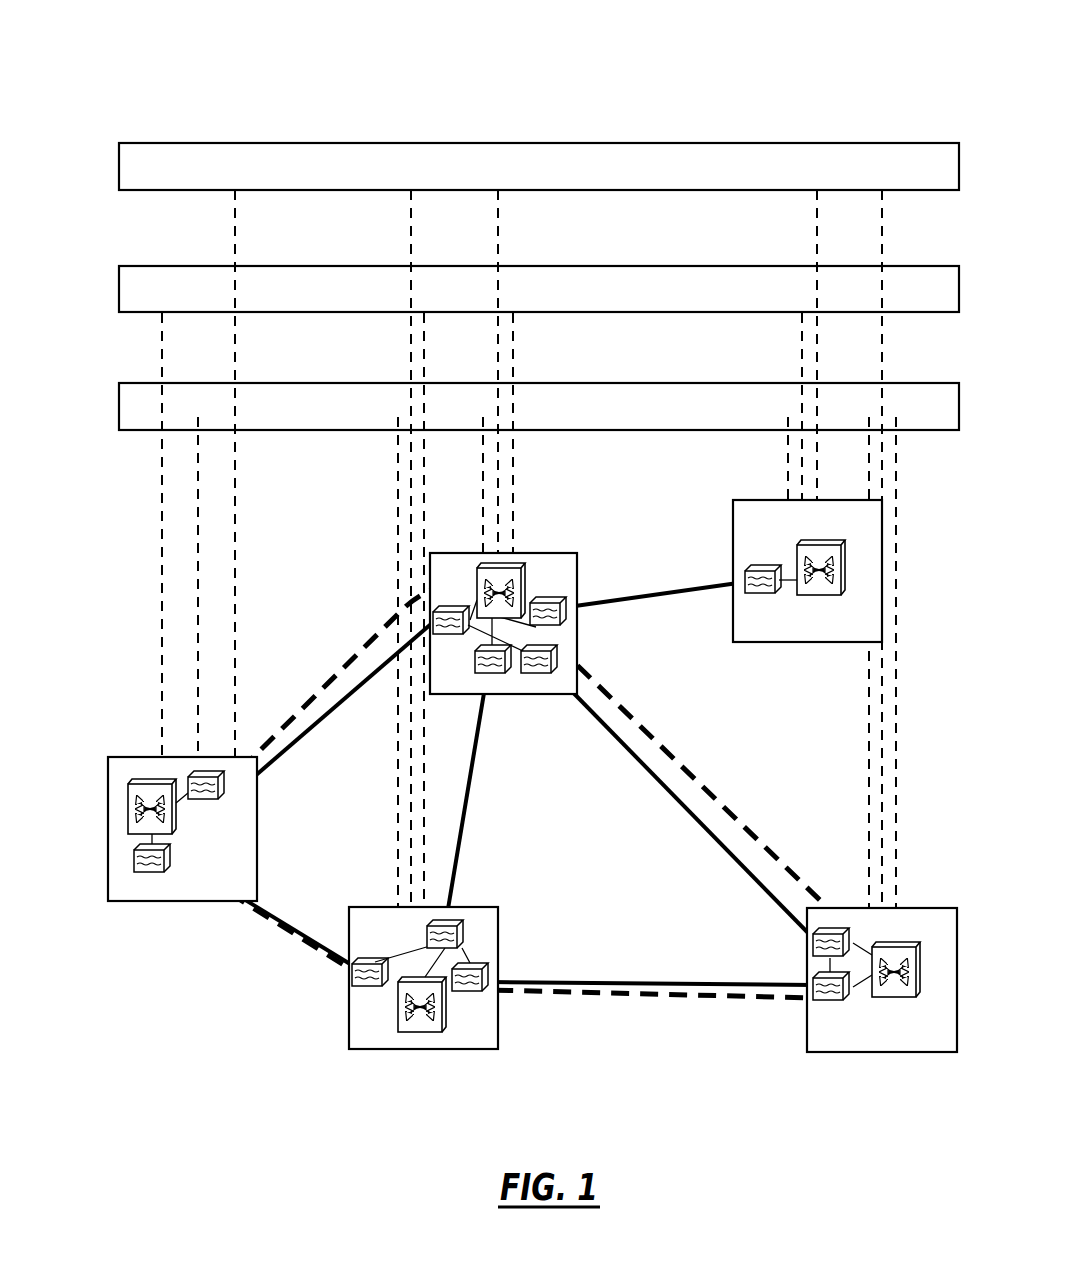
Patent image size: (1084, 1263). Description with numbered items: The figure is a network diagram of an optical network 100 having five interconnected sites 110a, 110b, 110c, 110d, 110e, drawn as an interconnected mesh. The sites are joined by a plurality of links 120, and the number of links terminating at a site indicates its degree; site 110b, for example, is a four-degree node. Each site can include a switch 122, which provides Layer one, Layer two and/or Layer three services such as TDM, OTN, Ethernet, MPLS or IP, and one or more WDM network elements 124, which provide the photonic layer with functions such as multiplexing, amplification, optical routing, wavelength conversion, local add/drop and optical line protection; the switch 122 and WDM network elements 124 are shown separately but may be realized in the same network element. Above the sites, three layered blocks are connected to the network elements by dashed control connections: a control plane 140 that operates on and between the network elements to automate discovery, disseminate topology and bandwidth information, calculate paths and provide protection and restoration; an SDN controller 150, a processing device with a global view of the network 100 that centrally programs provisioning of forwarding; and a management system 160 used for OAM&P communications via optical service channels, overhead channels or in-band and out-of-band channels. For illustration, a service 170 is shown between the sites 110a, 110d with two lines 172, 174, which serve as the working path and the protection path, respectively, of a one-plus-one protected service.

The optical network 100 is at (618, 62).
The management system 160 is at (698, 143).
The SDN controller 150 is at (698, 266).
The control plane 140 is at (698, 383).
The site 110a is at (108, 863).
The site 110b is at (542, 553).
The site 110c is at (823, 580).
The site 110d is at (857, 1052).
The site 110e is at (348, 1028).
The link 120 is at (615, 598).
The switch 122 is at (825, 540).
The WDM network element 124 is at (767, 560).
The service 170 is at (779, 828).
The line 172 is at (613, 703).
The line 174 is at (533, 980).